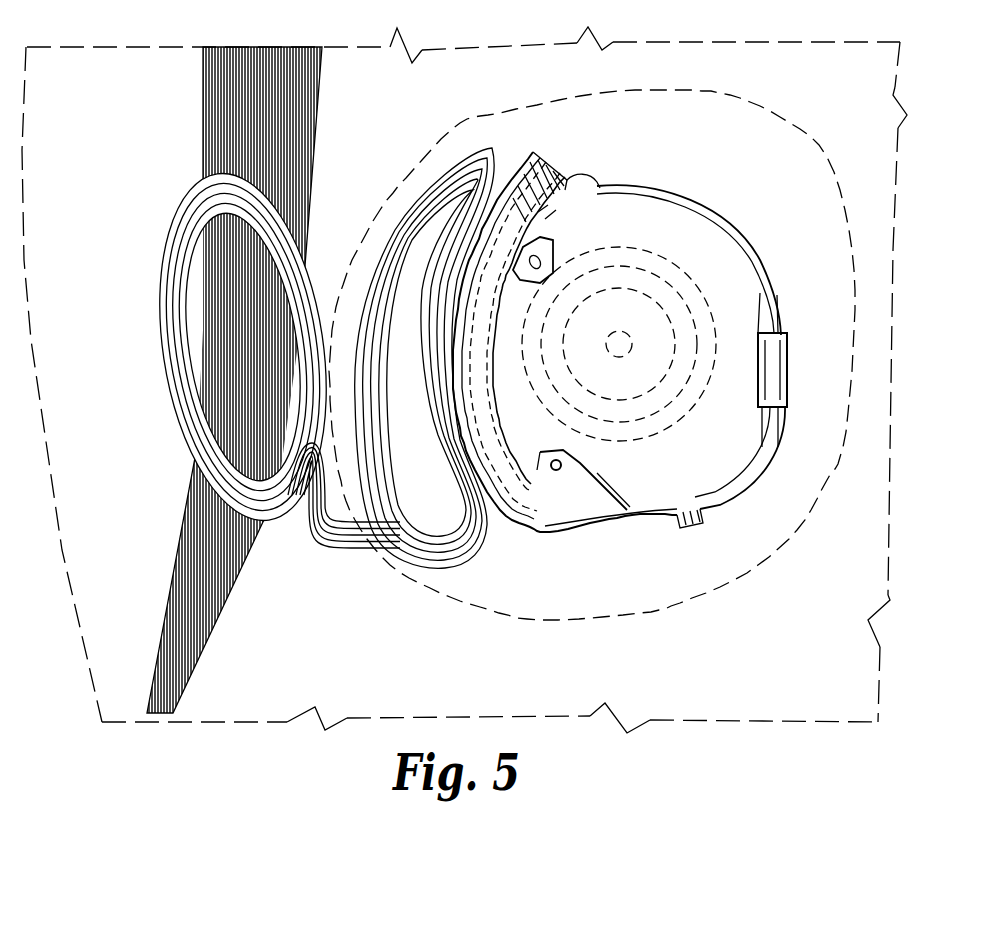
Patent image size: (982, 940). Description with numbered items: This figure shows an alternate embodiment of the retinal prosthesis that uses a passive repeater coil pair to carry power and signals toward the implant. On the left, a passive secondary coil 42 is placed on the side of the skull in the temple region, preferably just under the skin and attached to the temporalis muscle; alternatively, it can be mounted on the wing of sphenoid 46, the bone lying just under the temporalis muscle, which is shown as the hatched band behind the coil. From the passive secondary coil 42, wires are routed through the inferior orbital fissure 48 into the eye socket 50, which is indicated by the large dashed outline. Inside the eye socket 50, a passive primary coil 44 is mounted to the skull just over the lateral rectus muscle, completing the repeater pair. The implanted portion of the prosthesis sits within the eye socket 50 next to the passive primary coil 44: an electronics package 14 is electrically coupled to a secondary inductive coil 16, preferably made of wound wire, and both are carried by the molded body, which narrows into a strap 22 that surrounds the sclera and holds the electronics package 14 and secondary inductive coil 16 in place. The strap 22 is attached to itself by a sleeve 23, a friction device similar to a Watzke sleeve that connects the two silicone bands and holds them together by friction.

The electronics package 14 is at (533, 157).
The secondary inductive coil 16 is at (570, 497).
The strap 22 is at (741, 228).
The sleeve 23 is at (758, 367).
The passive secondary coil 42 is at (160, 292).
The passive primary coil 44 is at (477, 566).
The wing of sphenoid 46 is at (278, 121).
The inferior orbital fissure 48 is at (331, 527).
The eye socket 50 is at (728, 92).